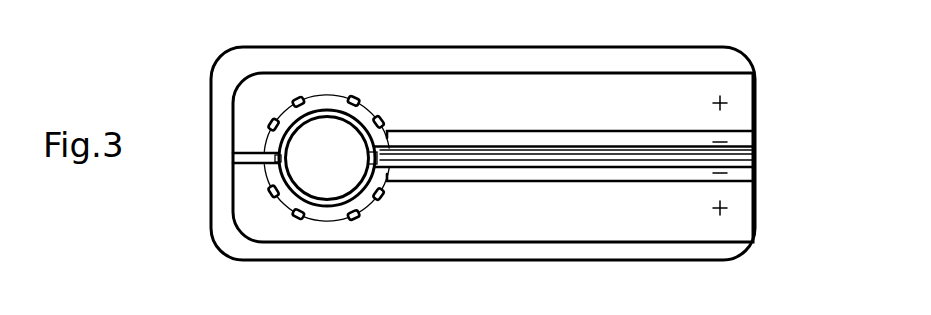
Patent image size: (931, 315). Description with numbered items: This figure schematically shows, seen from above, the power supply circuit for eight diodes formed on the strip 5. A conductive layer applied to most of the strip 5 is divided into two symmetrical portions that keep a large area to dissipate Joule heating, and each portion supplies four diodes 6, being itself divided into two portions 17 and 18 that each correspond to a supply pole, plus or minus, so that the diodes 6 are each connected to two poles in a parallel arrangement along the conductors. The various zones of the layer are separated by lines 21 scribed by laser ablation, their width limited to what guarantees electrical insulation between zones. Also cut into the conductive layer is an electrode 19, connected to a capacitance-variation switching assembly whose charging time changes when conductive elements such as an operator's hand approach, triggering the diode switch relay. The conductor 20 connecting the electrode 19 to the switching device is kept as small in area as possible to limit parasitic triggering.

The strip 5 is at (734, 31).
The diodes 6 is at (386, 121).
The supply pole portion 17 is at (570, 155).
The supply pole portion 18 is at (745, 173).
The electrode 19 is at (305, 158).
The conductor 20 is at (673, 157).
The lines 21 is at (415, 180).